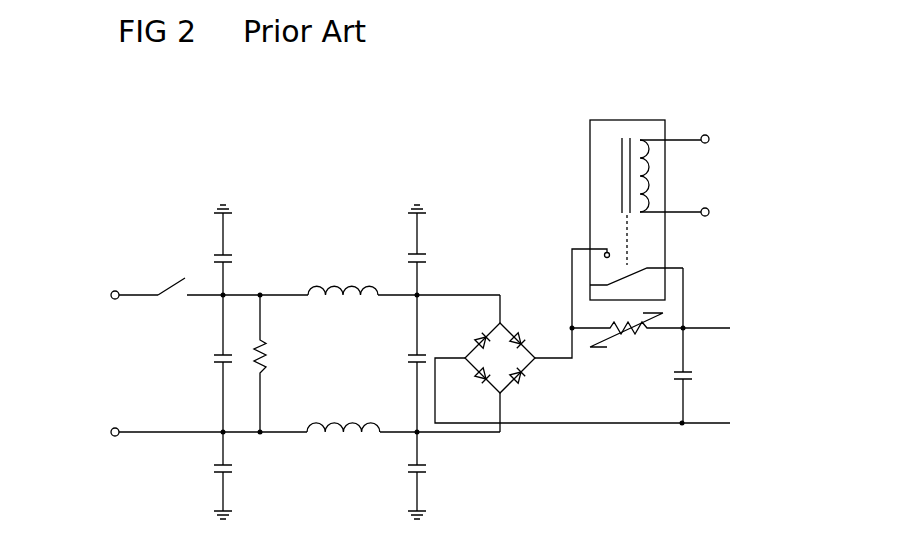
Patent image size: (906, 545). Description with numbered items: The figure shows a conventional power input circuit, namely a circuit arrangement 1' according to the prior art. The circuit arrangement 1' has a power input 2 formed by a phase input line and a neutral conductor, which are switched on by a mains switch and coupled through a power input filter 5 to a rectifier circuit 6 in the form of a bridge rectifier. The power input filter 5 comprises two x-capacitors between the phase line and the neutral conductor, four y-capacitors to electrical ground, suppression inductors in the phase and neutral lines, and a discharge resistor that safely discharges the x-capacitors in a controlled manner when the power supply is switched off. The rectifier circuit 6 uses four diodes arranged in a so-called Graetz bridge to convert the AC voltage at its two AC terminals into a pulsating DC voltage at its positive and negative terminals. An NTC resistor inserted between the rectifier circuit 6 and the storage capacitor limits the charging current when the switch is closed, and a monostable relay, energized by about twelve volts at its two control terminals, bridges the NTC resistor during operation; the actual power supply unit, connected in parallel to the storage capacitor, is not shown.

The circuit arrangement 1' is at (669, 229).
The power input 2 is at (94, 330).
The power input filter 5 is at (252, 150).
The rectifier circuit 6 is at (499, 247).